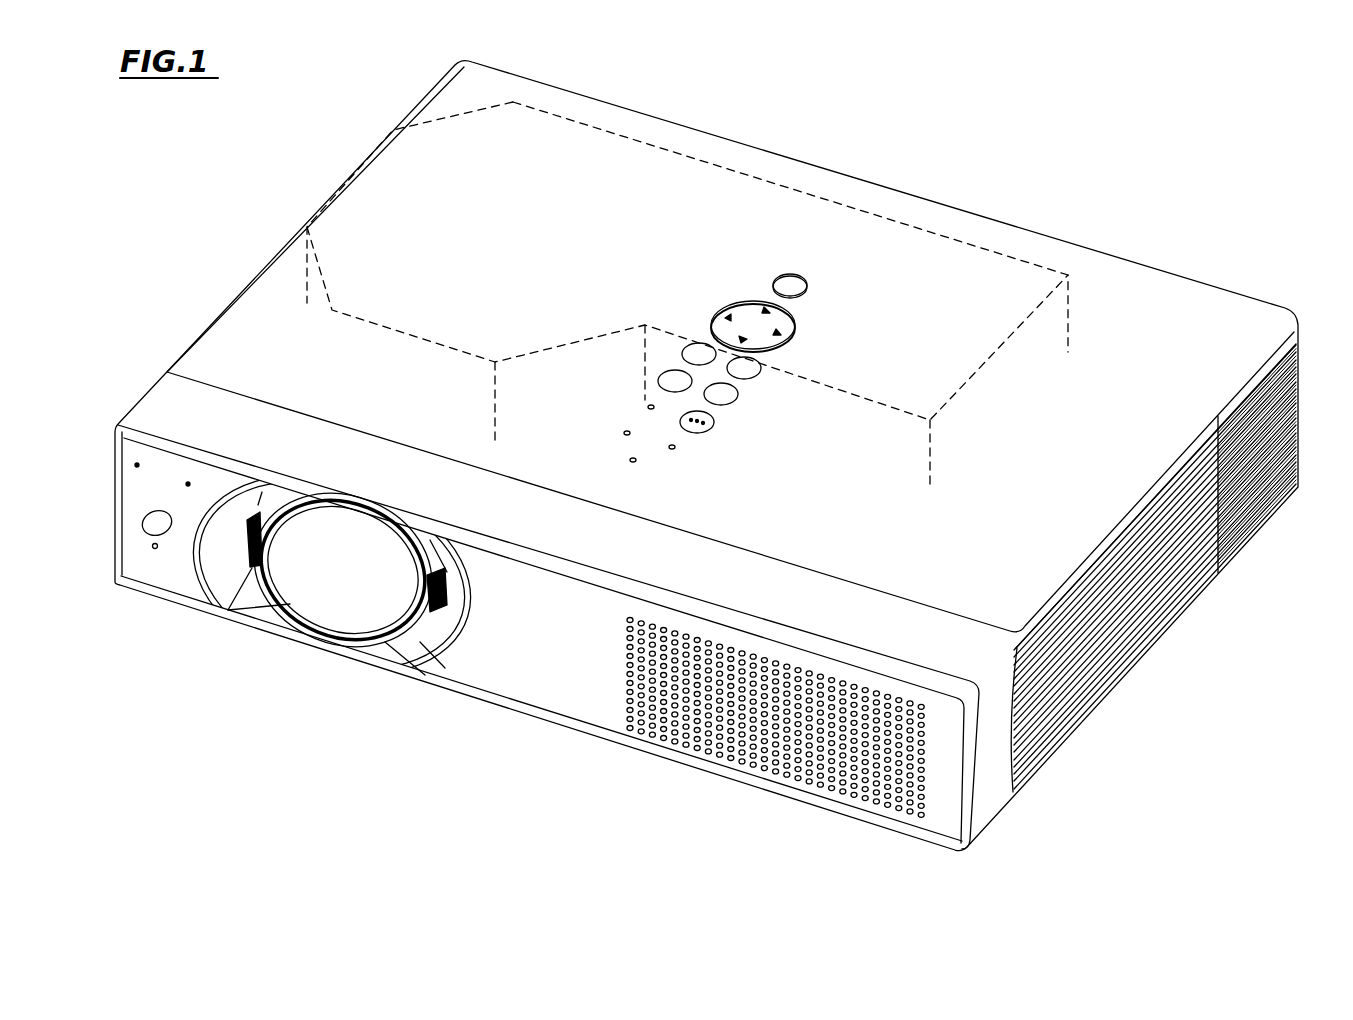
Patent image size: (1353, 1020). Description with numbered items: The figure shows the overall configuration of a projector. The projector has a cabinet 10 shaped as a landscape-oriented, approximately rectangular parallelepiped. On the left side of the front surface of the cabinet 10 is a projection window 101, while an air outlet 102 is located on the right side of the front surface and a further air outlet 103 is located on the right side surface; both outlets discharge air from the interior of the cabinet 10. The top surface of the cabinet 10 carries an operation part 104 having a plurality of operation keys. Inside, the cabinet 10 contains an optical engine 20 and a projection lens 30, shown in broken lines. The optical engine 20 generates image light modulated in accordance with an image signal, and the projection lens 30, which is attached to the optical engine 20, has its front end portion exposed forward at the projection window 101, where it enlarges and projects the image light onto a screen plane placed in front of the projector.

The cabinet 10 is at (1137, 265).
The optical engine 20 is at (710, 163).
The projection lens 30 is at (328, 600).
The projection window 101 is at (425, 678).
The air outlet 102 is at (720, 755).
The air outlet 103 is at (1163, 615).
The operation part 104 is at (807, 265).